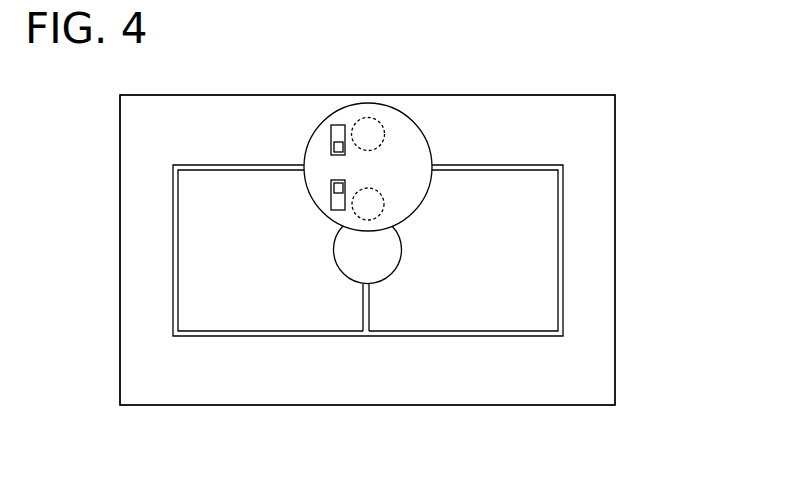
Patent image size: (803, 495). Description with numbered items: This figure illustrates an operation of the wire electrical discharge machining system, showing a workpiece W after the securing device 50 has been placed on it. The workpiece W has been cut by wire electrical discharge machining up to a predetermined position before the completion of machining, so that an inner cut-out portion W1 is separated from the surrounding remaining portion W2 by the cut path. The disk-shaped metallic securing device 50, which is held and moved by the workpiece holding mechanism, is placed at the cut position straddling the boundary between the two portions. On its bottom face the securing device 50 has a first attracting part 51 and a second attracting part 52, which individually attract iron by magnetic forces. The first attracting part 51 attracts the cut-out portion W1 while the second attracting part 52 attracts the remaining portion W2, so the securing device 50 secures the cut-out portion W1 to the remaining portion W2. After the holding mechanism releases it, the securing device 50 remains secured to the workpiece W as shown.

The securing device 50 is at (314, 130).
The first attracting part 51 is at (383, 200).
The second attracting part 52 is at (368, 117).
The workpiece W is at (632, 272).
The cut-out portion W1 is at (203, 253).
The remaining portion W2 is at (585, 166).